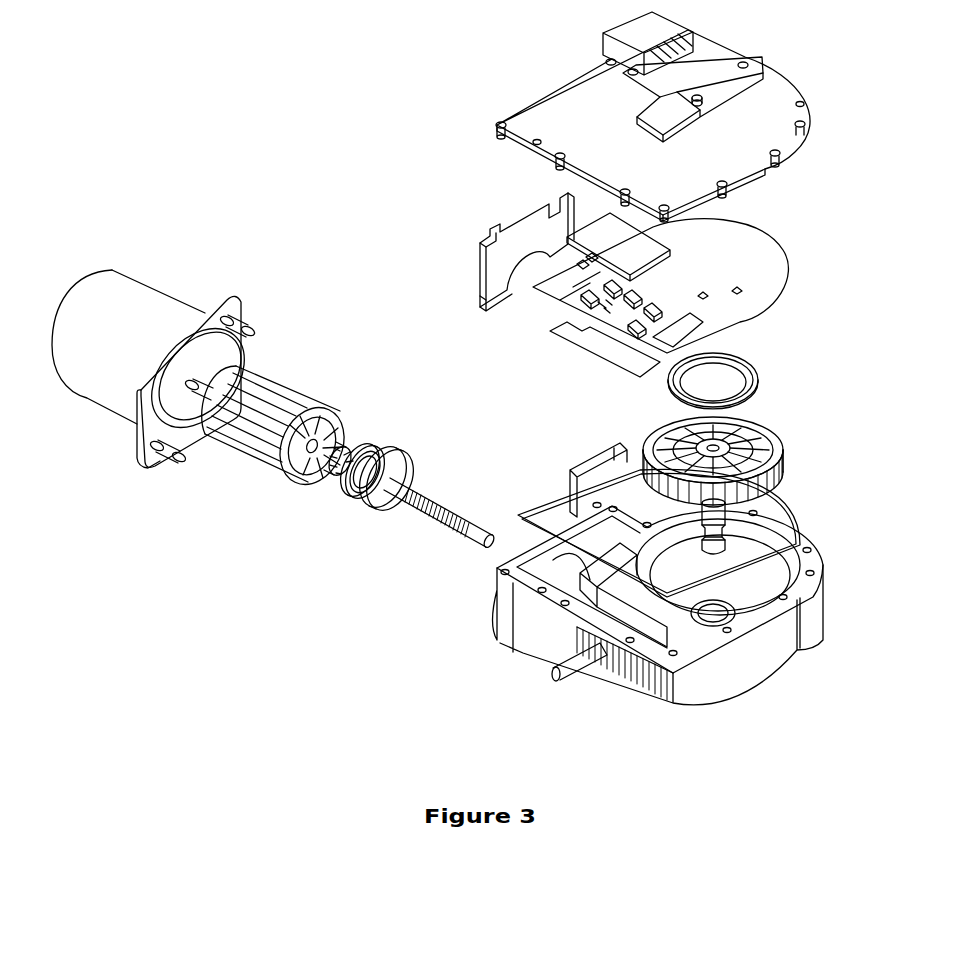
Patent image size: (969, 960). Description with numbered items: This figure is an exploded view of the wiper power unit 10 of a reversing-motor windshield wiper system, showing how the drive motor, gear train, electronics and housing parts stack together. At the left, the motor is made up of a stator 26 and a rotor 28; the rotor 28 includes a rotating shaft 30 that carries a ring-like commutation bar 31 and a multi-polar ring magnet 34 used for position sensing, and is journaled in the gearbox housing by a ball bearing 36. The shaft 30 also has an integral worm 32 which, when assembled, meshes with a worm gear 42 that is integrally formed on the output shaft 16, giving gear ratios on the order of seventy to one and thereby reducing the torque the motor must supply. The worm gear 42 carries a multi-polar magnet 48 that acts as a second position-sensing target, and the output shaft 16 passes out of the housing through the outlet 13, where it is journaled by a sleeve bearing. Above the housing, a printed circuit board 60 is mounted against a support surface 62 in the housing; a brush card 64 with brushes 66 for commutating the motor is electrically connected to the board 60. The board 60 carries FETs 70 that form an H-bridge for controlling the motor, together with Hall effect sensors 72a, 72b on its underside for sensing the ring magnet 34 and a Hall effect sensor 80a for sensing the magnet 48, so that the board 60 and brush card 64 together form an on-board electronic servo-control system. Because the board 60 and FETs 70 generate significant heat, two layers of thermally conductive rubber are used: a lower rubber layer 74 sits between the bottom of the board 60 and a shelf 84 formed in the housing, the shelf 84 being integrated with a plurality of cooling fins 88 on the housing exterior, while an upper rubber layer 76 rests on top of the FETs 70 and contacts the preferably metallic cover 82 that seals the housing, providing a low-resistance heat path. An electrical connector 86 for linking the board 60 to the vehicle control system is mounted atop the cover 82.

The wiper power unit 10 is at (343, 110).
The outlet 13 is at (727, 612).
The output shaft 16 is at (722, 512).
The stator 26 is at (160, 280).
The rotor 28 is at (289, 377).
The rotating shaft 30 is at (413, 480).
The commutation bar 31 is at (352, 445).
The worm 32 is at (455, 502).
The multi-polar ring magnet 34 is at (376, 452).
The ball bearing 36 is at (365, 490).
The worm gear 42 is at (783, 443).
The multi-polar magnet 48 is at (760, 377).
The printed circuit board 60 is at (698, 286).
The support surface 62 is at (548, 557).
The brush card 64 is at (517, 222).
The brushes 66 is at (481, 272).
The FETs 70 is at (660, 307).
The Hall effect sensor 72a is at (578, 272).
The Hall effect sensor 72b is at (588, 283).
The thermally conductive rubber layer 74 is at (603, 360).
The thermally conductive rubber layer 76 is at (607, 222).
The Hall effect sensor 80a is at (740, 291).
The cover 82 is at (812, 112).
The shelf 84 is at (647, 667).
The electrical connector 86 is at (708, 42).
The cooling fins 88 is at (657, 703).